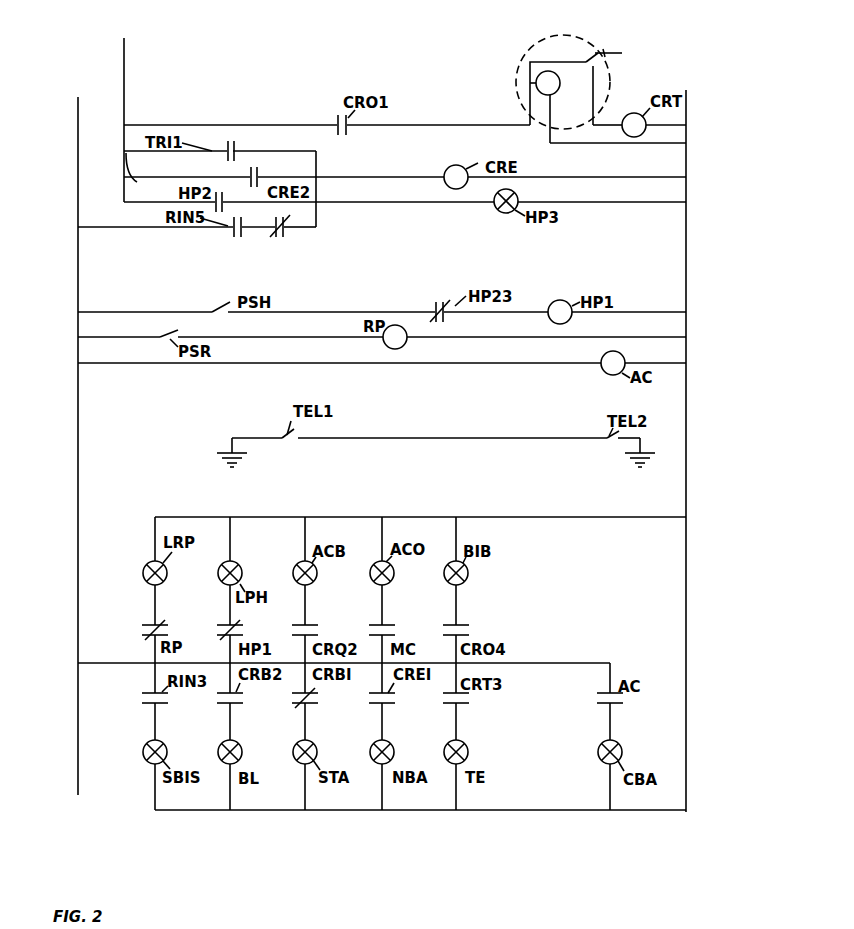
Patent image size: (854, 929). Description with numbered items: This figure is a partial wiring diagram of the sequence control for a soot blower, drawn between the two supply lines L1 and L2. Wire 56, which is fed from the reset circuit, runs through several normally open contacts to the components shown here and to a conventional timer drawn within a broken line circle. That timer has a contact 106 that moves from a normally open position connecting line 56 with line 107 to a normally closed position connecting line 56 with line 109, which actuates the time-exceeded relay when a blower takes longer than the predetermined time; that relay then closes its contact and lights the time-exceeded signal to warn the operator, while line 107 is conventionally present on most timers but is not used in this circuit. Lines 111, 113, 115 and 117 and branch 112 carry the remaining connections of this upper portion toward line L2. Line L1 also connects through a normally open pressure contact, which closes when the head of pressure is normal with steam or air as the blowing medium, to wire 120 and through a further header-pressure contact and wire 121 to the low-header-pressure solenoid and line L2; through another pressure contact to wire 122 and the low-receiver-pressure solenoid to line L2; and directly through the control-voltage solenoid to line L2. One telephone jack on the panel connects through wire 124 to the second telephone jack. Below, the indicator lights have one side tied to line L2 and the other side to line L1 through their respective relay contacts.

The wire 56 is at (124, 61).
The timer contact 106 is at (584, 64).
The line 107 is at (619, 45).
The line 109 is at (609, 122).
The conductor 111 is at (628, 143).
The conductor 112 is at (220, 169).
The conductor 113 is at (206, 177).
The conductor 115 is at (579, 176).
The conductor 117 is at (97, 228).
The wire 120 is at (362, 310).
The wire 121 is at (522, 310).
The wire 122 is at (300, 338).
The wire 124 is at (350, 438).
The line L1 is at (77, 546).
The line L2 is at (686, 770).